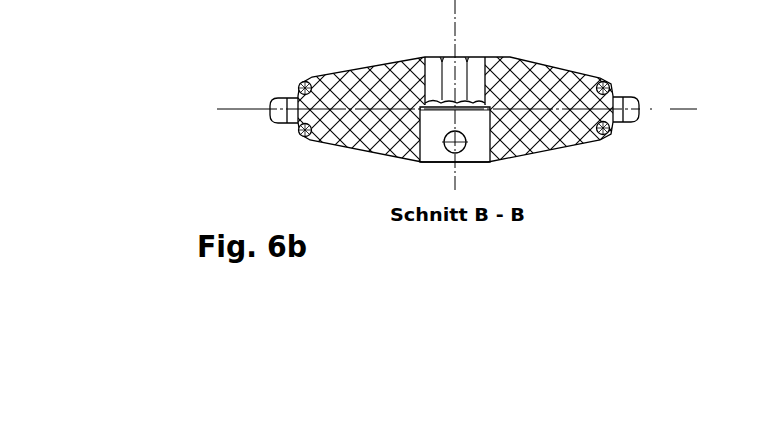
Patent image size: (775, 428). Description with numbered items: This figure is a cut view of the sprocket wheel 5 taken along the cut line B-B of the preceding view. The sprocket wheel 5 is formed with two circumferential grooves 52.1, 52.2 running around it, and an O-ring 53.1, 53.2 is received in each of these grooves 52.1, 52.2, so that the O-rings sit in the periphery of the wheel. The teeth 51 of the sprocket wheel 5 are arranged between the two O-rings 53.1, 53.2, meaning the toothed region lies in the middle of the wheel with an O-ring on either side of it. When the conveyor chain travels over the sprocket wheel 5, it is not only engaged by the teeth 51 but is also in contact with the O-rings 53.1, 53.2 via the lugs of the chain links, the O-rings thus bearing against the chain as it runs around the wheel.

The sprocket wheel 5 is at (460, 98).
The teeth 51 is at (633, 110).
The circumferential groove 52.1 is at (315, 140).
The circumferential groove 52.2 is at (312, 80).
The O-ring 53.1 is at (612, 132).
The O-ring 53.2 is at (610, 82).